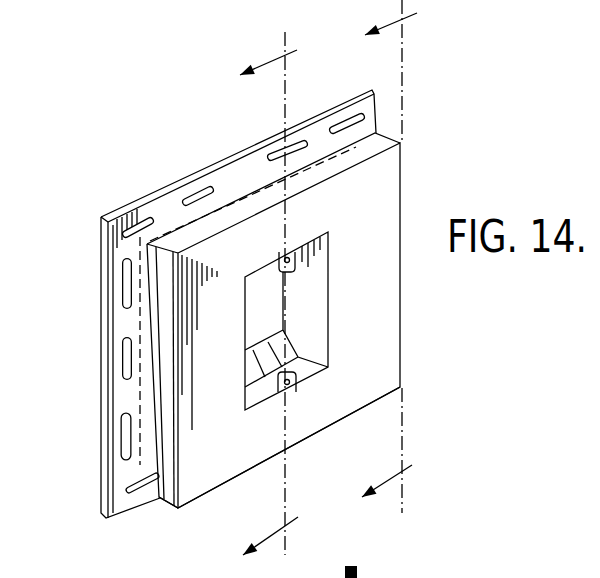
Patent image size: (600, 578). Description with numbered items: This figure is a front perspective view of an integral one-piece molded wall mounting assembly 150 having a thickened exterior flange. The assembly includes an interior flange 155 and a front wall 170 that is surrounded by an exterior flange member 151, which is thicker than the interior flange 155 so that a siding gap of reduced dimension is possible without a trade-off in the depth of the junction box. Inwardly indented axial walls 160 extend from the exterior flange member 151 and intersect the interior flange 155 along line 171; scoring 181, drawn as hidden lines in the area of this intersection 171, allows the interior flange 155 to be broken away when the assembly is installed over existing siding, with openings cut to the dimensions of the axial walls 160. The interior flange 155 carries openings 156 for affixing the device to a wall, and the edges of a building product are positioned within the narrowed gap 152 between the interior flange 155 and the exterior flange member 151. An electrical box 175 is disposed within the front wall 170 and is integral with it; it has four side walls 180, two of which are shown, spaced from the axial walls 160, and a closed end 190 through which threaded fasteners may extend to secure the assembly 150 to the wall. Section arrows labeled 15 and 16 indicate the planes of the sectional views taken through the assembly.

The wall mounting assembly 150 is at (425, 182).
The exterior flange member 151 is at (172, 499).
The narrowed gap 152 is at (257, 190).
The interior flange 155 is at (150, 195).
The openings 156 is at (188, 193).
The inwardly indented axial walls 160 is at (156, 397).
The front wall 170 is at (383, 317).
The line of intersection 171 is at (322, 158).
The electrical box 175 is at (295, 321).
The side walls 180 is at (305, 368).
The scoring 181 is at (222, 185).
The closed end 190 is at (265, 280).
The section line 15 is at (397, 256).
The section line 16 is at (269, 304).